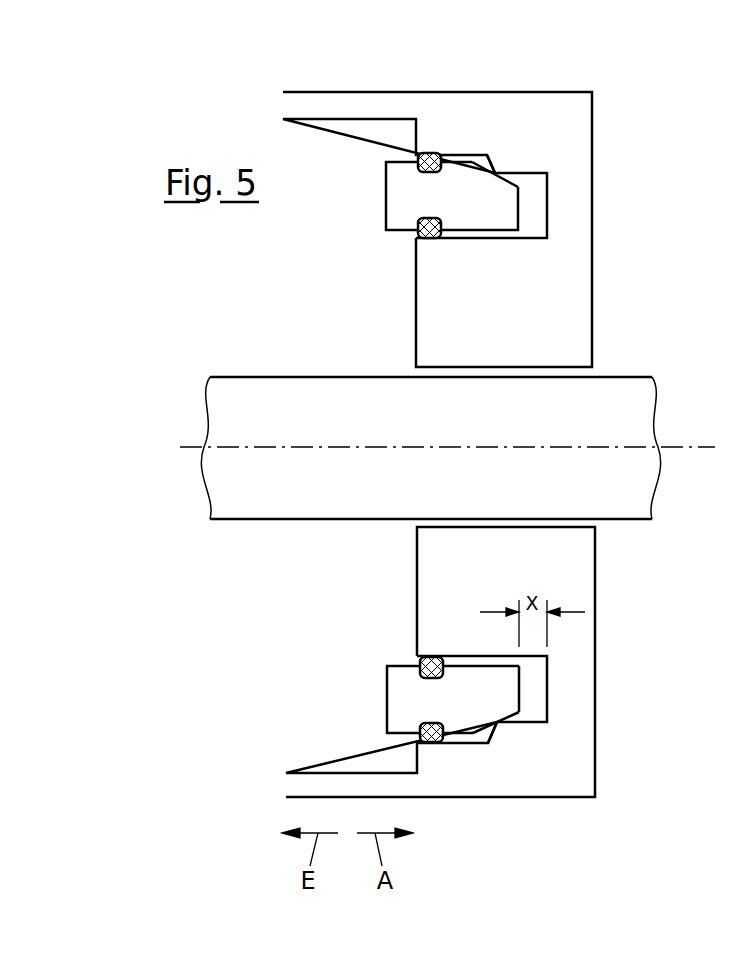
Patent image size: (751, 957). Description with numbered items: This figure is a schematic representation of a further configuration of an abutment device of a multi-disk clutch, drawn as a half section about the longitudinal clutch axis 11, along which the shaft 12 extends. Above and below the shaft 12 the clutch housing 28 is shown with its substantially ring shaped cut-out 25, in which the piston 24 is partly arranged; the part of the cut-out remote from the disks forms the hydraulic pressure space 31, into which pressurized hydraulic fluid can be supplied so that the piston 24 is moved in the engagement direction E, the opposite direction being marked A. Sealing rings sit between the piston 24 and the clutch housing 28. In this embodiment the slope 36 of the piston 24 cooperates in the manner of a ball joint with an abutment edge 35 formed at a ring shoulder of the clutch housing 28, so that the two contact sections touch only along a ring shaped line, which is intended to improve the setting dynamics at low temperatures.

The longitudinal clutch axis 11 is at (678, 447).
The shaft 12 is at (630, 377).
The piston 24 is at (385, 203).
The ring shaped cut-out 25 is at (535, 675).
The clutch housing 28 is at (538, 92).
The hydraulic pressure space 31 is at (533, 218).
The abutment edge 35 is at (495, 173).
The slope 36 is at (492, 165).